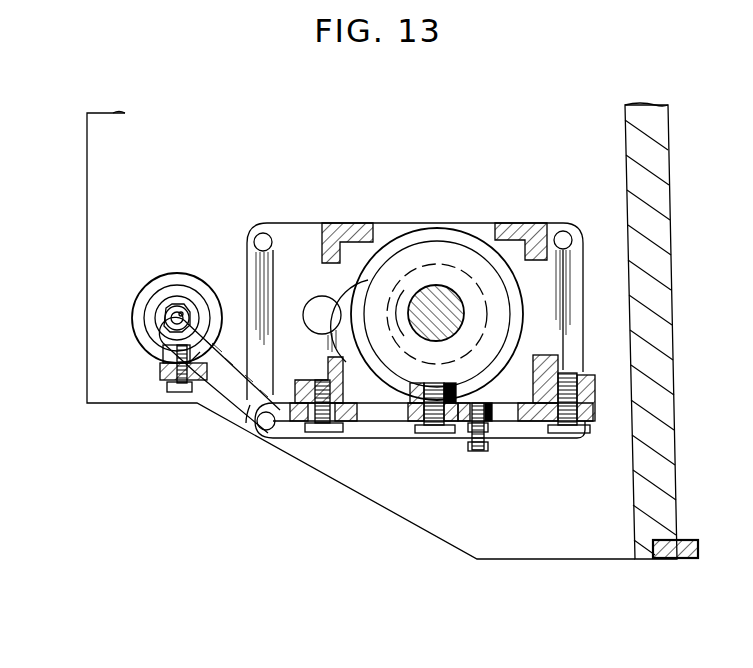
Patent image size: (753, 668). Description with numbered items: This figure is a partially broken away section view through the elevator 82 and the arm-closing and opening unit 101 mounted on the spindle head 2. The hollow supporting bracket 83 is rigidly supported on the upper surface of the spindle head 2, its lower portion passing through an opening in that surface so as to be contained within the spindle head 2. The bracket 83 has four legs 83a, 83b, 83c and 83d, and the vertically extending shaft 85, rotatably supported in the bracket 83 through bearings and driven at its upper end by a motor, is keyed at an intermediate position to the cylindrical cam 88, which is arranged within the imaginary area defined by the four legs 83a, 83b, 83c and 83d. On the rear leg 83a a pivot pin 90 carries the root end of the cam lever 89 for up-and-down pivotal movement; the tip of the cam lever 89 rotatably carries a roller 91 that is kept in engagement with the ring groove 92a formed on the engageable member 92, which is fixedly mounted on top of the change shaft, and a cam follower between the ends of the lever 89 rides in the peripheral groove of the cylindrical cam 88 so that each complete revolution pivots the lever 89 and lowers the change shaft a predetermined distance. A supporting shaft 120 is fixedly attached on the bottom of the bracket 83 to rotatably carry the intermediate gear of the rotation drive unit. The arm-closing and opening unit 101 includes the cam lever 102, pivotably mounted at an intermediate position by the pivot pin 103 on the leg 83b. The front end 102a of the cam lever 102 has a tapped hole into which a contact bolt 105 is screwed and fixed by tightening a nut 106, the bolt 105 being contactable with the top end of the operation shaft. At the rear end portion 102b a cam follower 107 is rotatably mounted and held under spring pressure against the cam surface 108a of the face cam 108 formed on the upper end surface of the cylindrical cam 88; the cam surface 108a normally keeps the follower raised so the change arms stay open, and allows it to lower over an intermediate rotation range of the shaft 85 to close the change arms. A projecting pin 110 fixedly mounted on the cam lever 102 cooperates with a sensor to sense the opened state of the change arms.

The spindle head 2 is at (605, 540).
The elevator 82 is at (158, 389).
The hollow supporting bracket 83 is at (589, 312).
The rear leg 83a is at (546, 364).
The leg 83b is at (287, 404).
The leg 83c is at (528, 223).
The leg 83d is at (347, 222).
The vertically extending shaft 85 is at (437, 286).
The cylindrical cam 88 is at (526, 284).
The cam lever 89 is at (518, 413).
The pivot pin 90 is at (573, 420).
The roller 91 is at (157, 362).
The engageable member 92 is at (185, 345).
The ring groove 92a is at (157, 347).
The arm-closing and opening unit 101 is at (242, 398).
The cam lever 102 is at (375, 414).
The front end 102a is at (183, 312).
The rear end portion 102b is at (467, 414).
The pivot pin 103 is at (322, 418).
The contact bolt 105 is at (165, 318).
The nut 106 is at (172, 305).
The cam follower 107 is at (426, 407).
The face cam 108 is at (475, 226).
The cam surface 108a is at (406, 226).
The projecting pin 110 is at (480, 452).
The supporting shaft 120 is at (308, 305).